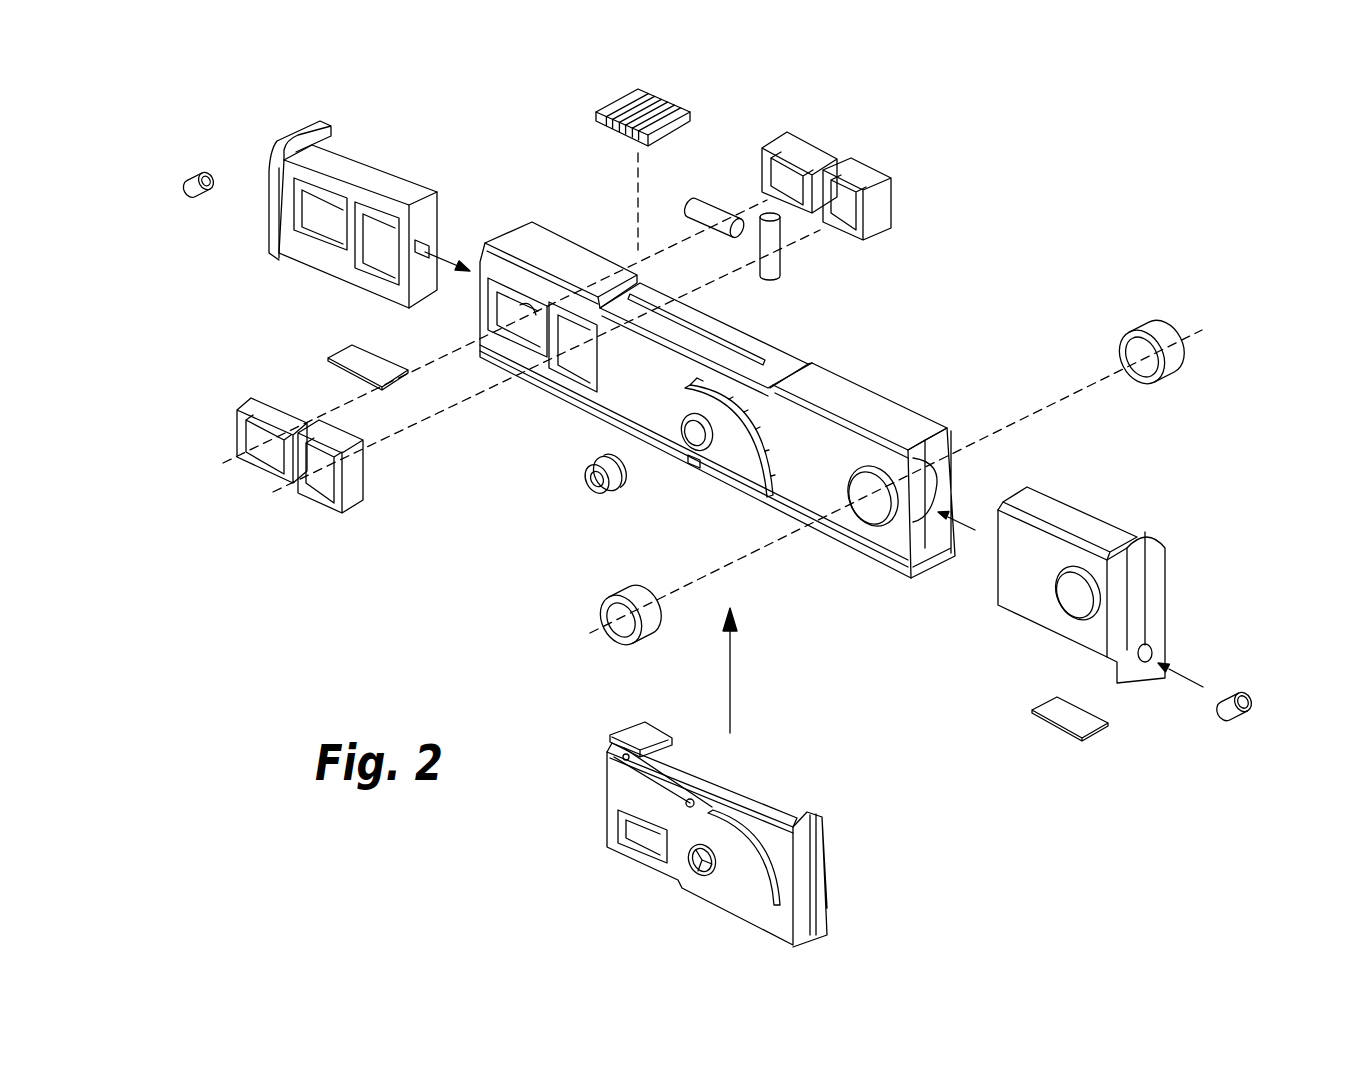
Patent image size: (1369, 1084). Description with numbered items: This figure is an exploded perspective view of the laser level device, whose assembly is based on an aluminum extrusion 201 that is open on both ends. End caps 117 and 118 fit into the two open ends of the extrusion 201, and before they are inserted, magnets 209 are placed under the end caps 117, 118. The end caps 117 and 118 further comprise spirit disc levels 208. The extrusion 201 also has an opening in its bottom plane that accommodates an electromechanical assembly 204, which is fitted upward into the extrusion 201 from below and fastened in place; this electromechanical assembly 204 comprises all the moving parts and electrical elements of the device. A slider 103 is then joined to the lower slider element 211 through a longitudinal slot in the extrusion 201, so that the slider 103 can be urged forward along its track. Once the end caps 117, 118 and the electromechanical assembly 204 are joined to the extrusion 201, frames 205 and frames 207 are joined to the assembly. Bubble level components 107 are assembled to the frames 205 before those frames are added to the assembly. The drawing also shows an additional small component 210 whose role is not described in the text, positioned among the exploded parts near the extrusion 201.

The slider 103 is at (642, 112).
The bubble level components 107 is at (727, 217).
The end cap 117 is at (402, 182).
The end cap 118 is at (1082, 505).
The aluminum extrusion 201 is at (852, 388).
The electromechanical assembly 204 is at (730, 775).
The frames 205 is at (757, 173).
The frames 207 is at (1123, 360).
The spirit disc levels 208 is at (185, 166).
The magnets 209 is at (360, 350).
The knob 210 is at (590, 477).
The lower slider element 211 is at (640, 732).